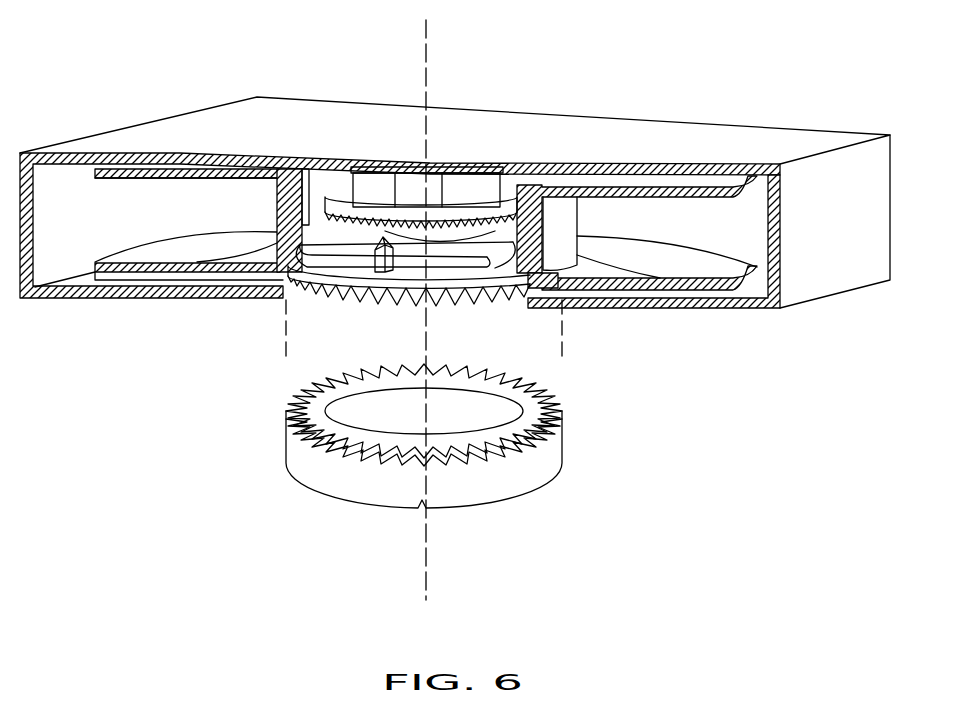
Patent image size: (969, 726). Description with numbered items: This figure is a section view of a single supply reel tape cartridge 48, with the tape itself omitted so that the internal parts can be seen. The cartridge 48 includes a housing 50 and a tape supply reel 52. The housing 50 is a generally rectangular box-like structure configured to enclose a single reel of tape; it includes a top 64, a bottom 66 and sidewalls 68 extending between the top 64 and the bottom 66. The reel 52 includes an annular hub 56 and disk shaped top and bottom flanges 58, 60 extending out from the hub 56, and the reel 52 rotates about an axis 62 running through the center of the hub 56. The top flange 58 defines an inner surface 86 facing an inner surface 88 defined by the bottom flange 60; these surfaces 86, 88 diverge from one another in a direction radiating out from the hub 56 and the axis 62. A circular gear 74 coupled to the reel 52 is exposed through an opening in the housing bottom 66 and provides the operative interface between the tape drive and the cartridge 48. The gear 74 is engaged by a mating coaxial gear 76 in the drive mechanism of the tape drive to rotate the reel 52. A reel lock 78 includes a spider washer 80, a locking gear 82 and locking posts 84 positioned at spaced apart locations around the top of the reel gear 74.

The single supply reel tape cartridge 48 is at (158, 50).
The housing 50 is at (735, 308).
The tape supply reel 52 is at (743, 195).
The annular hub 56 is at (568, 215).
The top flange 58 is at (163, 182).
The bottom flange 60 is at (143, 270).
The axis 62 is at (427, 57).
The top 64 is at (593, 132).
The bottom 66 is at (636, 310).
The sidewalls 68 is at (827, 277).
The circular gear 74 is at (483, 290).
The mating coaxial gear 76 is at (542, 467).
The reel lock 78 is at (337, 185).
The spider washer 80 is at (478, 245).
The locking gear 82 is at (325, 209).
The locking posts 84 is at (380, 258).
The inner surface of top flange 86 is at (125, 182).
The inner surface of bottom flange 88 is at (143, 255).